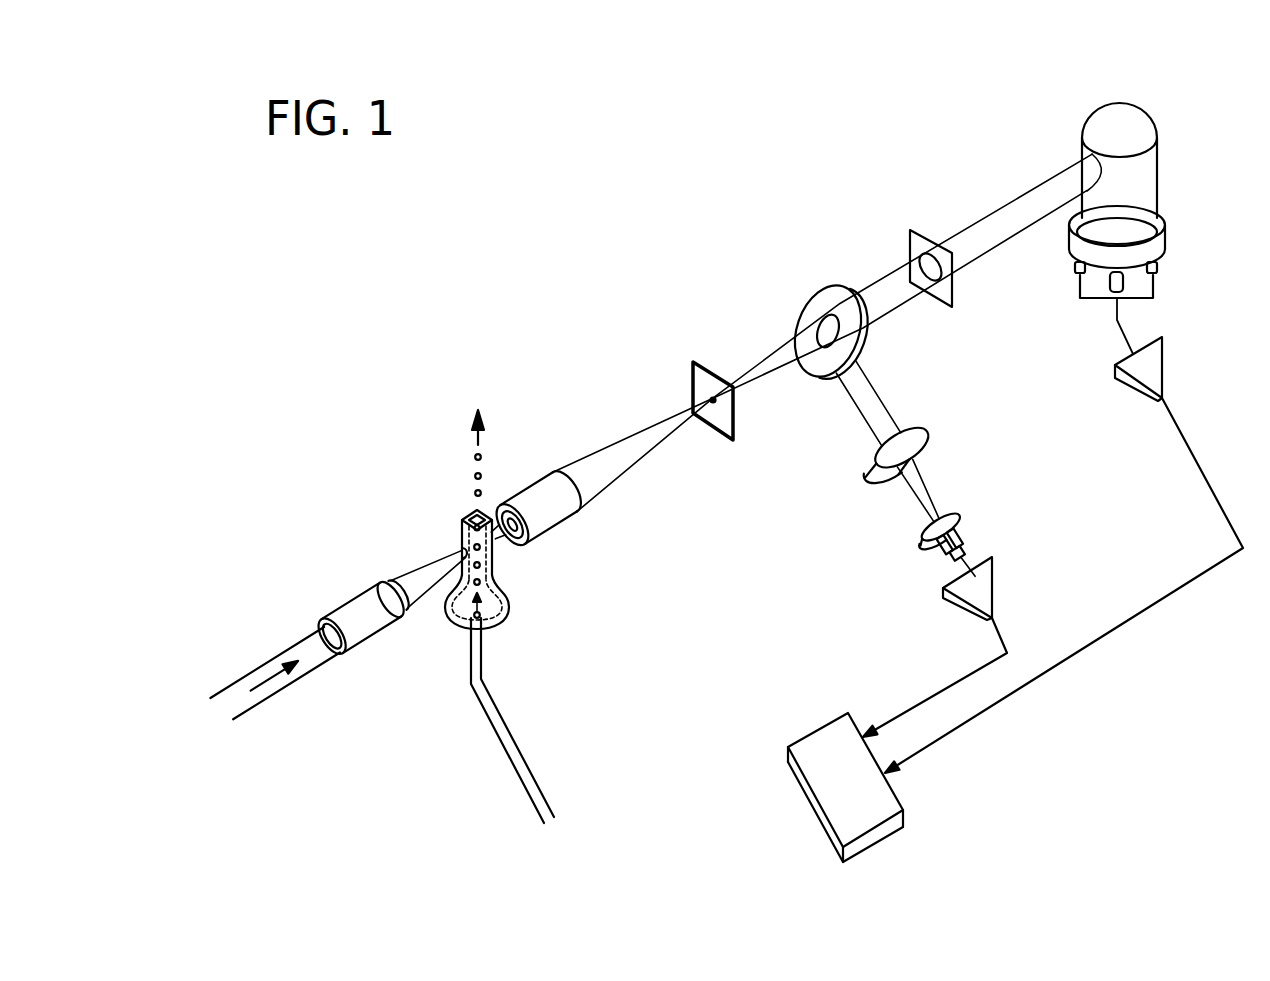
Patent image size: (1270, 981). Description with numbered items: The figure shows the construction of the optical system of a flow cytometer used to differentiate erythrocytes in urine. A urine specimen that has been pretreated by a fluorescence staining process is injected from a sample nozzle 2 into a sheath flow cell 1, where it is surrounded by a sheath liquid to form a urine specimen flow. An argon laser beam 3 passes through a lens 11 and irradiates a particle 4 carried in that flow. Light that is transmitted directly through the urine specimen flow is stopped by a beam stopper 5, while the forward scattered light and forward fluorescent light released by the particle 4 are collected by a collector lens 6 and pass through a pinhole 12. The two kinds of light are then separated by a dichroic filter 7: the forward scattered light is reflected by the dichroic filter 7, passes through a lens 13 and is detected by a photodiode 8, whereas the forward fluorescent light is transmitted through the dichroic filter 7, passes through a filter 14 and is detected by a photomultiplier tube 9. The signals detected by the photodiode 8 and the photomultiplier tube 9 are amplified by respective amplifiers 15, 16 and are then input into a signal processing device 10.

The sheath flow cell 1 is at (492, 562).
The sample nozzle 2 is at (492, 657).
The argon laser beam 3 is at (230, 697).
The particle 4 is at (473, 459).
The beam stopper 5 is at (504, 510).
The collector lens 6 is at (553, 510).
The dichroic filter 7 is at (807, 302).
The photodiode 8 is at (960, 517).
The photomultiplier tube 9 is at (1148, 178).
The signal processing device 10 is at (885, 805).
The lens 11 is at (366, 607).
The pinhole 12 is at (693, 377).
The lens 13 is at (915, 433).
The filter 14 is at (918, 243).
The amplifier 15 is at (982, 590).
The amplifier 16 is at (1153, 357).